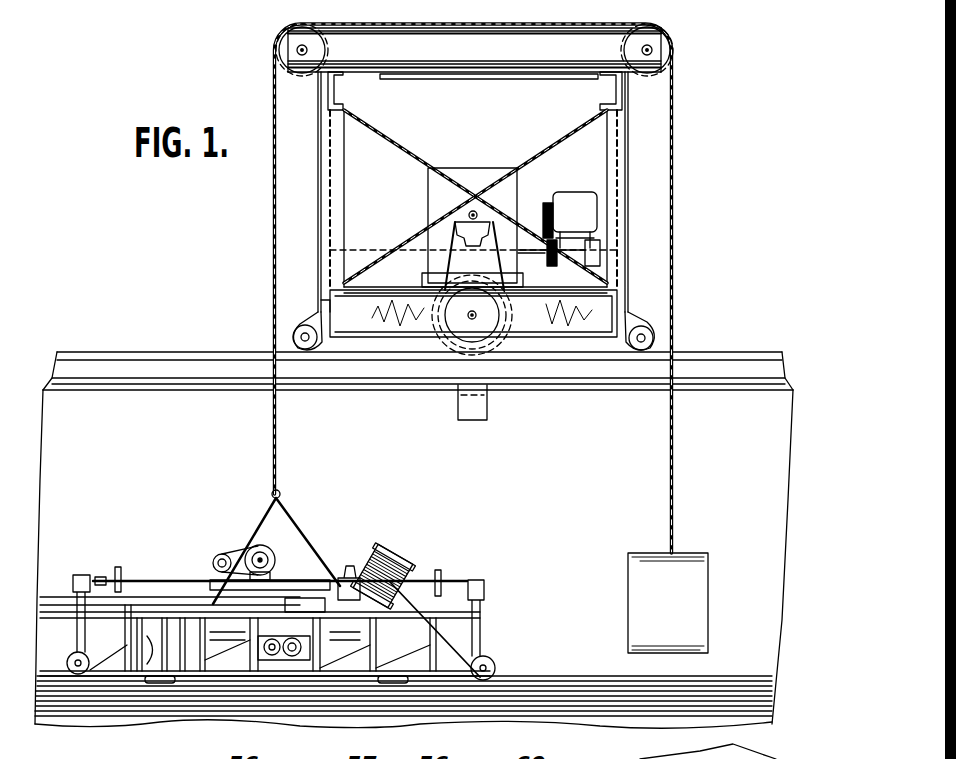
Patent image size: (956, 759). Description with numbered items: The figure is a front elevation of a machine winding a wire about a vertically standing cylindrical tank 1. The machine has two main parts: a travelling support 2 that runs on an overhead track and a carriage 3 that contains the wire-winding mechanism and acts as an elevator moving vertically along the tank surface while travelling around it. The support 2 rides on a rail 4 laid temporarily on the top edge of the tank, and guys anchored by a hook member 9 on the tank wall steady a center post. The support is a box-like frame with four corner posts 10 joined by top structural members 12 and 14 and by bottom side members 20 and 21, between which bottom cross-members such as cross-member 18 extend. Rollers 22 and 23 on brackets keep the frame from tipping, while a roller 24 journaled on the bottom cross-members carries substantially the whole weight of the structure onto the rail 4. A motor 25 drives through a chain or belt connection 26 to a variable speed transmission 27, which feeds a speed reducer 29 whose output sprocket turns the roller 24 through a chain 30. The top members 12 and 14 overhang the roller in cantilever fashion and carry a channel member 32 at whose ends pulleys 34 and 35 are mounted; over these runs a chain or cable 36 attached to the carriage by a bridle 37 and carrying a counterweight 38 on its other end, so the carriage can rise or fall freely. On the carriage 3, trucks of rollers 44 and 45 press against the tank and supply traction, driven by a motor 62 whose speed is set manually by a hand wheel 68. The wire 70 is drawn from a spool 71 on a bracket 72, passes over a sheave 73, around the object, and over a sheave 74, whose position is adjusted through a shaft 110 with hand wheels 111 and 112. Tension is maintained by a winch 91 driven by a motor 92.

The cylindrical tank 1 is at (73, 418).
The travelling support 2 is at (676, 38).
The carriage 3 is at (474, 578).
The rail 4 is at (198, 362).
The hook member 9 is at (475, 410).
The corner posts 10 is at (323, 165).
The top structural member 12 is at (343, 92).
The top structural member 14 is at (614, 96).
The bottom cross-member 18 is at (568, 345).
The bottom side member 20 is at (618, 307).
The bottom side member 21 is at (318, 300).
The roller 22 is at (653, 328).
The roller 23 is at (298, 326).
The roller 24 is at (444, 353).
The motor 25 is at (577, 203).
The chain or belt connection 26 is at (543, 208).
The variable speed transmission 27 is at (573, 290).
The speed reducer 29 is at (483, 173).
The chain 30 is at (443, 257).
The channel member 32 is at (456, 62).
The pulley 34 is at (301, 74).
The pulley 35 is at (656, 77).
The chain or cable 36 is at (577, 26).
The bridle 37 is at (298, 512).
The counterweight 38 is at (648, 572).
The rollers 44 is at (161, 684).
The rollers 45 is at (396, 686).
The motor 62 is at (291, 633).
The hand wheel 68 is at (265, 658).
The wire 70 is at (442, 652).
The spool 71 is at (390, 546).
The bracket 72 is at (350, 585).
The sheave 73 is at (494, 664).
The sheave 74 is at (67, 662).
The winch 91 is at (223, 557).
The motor 92 is at (277, 544).
The hand wheel shaft 110 is at (182, 584).
The hand wheel 111 is at (125, 561).
The hand wheel 112 is at (438, 574).